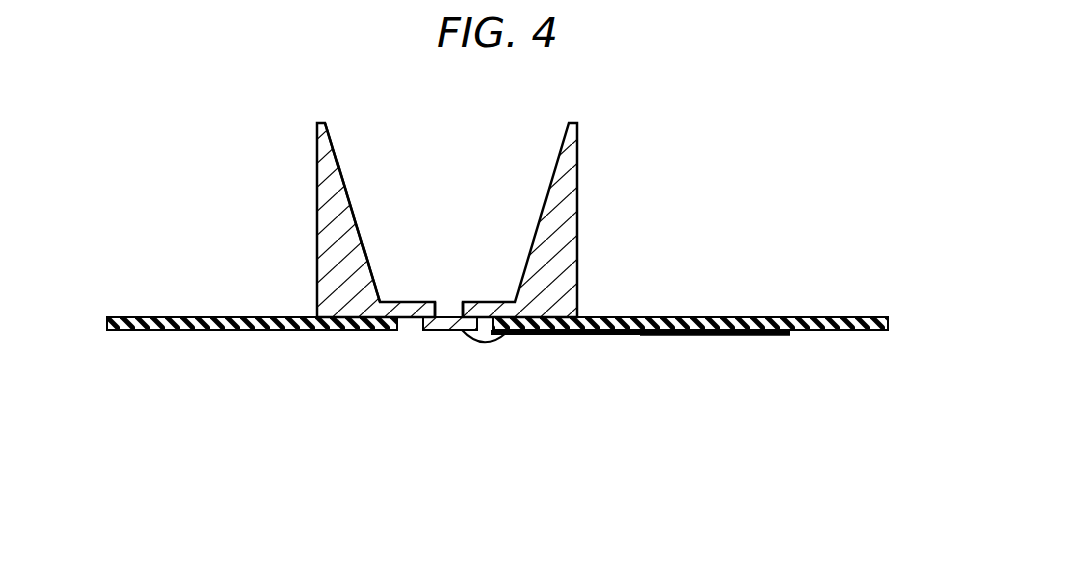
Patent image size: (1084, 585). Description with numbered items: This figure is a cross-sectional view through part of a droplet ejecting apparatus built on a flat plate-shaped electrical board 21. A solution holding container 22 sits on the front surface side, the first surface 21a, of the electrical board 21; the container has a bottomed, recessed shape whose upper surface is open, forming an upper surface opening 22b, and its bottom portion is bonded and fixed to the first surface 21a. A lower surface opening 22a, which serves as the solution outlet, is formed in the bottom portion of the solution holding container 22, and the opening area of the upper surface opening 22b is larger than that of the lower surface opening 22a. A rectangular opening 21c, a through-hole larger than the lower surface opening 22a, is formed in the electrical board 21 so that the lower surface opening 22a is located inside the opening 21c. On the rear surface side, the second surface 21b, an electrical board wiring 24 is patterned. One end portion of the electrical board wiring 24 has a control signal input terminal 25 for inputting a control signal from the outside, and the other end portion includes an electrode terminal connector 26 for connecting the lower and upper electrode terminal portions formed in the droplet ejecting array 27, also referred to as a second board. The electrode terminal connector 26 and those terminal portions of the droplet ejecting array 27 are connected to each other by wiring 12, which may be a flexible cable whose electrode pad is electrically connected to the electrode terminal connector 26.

The wiring 12 is at (482, 342).
The electrical board 21 is at (709, 318).
The first surface 21a is at (188, 317).
The second surface 21b is at (197, 330).
The opening 21c is at (404, 331).
The solution holding container 22 is at (333, 205).
The lower surface opening 22a is at (447, 310).
The upper surface opening 22b is at (338, 158).
The electrical board wiring 24 is at (604, 336).
The control signal input terminal 25 is at (729, 335).
The electrode terminal connector 26 is at (512, 334).
The droplet ejecting array 27 is at (437, 331).